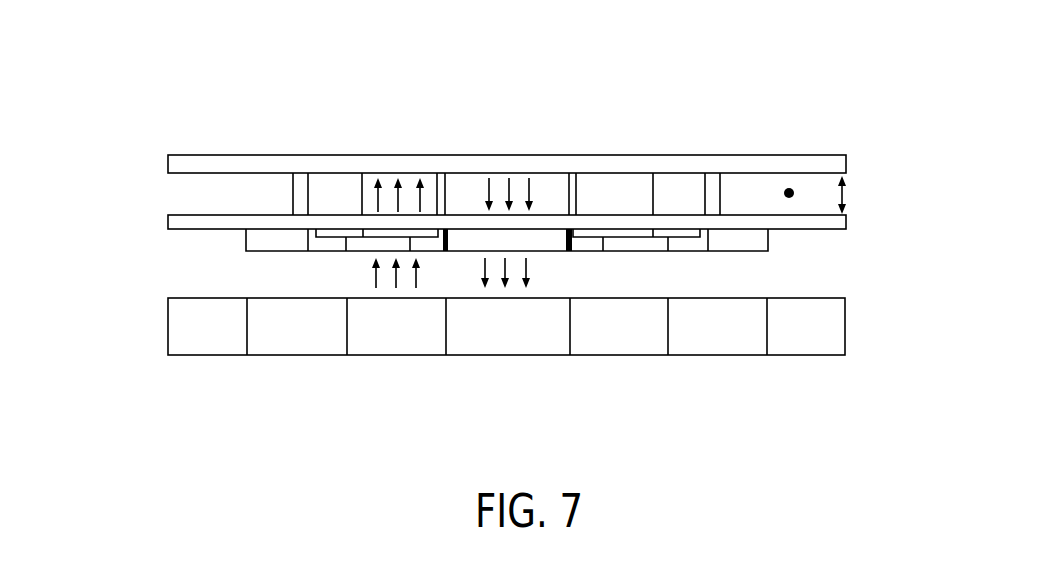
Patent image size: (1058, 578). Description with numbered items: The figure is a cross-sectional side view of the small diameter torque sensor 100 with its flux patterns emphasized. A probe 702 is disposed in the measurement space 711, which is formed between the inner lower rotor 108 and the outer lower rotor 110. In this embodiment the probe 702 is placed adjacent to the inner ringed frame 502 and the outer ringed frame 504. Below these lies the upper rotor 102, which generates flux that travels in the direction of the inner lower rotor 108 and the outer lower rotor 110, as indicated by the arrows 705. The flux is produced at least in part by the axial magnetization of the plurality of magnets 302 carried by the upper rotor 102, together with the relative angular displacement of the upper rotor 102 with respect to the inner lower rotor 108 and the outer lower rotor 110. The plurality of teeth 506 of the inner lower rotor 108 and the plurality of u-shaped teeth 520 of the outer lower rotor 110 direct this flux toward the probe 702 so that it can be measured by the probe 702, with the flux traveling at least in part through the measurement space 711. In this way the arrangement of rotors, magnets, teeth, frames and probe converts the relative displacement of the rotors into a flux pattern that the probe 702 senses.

The small diameter torque sensor 100 is at (132, 115).
The upper rotor 102 is at (187, 357).
The inner lower rotor 108 is at (848, 229).
The outer lower rotor 110 is at (848, 165).
The plurality of magnets 302 is at (745, 356).
The inner ringed frame 502 is at (832, 229).
The outer ringed frame 504 is at (825, 155).
The plurality of teeth 506 is at (707, 251).
The plurality of u-shaped teeth 520 is at (678, 190).
The probe 702 is at (786, 189).
The arrows 705 is at (484, 265).
The measurement space 711 is at (848, 195).